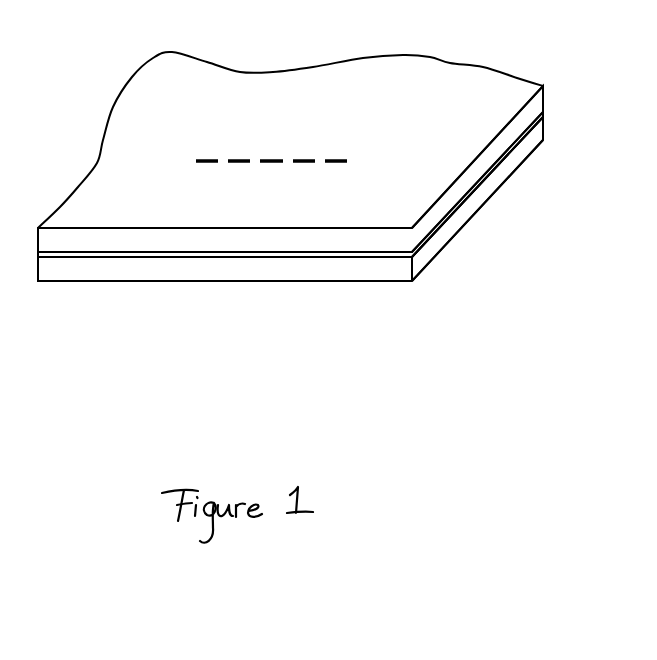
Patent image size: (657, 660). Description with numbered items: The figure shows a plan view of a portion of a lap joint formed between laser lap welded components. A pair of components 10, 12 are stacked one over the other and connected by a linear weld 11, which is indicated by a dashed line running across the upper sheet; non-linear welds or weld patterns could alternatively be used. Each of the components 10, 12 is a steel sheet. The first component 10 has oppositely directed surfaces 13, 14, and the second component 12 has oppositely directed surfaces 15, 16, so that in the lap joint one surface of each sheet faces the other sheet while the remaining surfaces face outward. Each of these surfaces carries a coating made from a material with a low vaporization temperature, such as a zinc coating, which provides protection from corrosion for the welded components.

The component 10 is at (354, 269).
The linear weld 11 is at (243, 155).
The component 12 is at (358, 244).
The surface 13 is at (534, 136).
The surface 14 is at (495, 198).
The surface 15 is at (499, 155).
The surface 16 is at (467, 165).